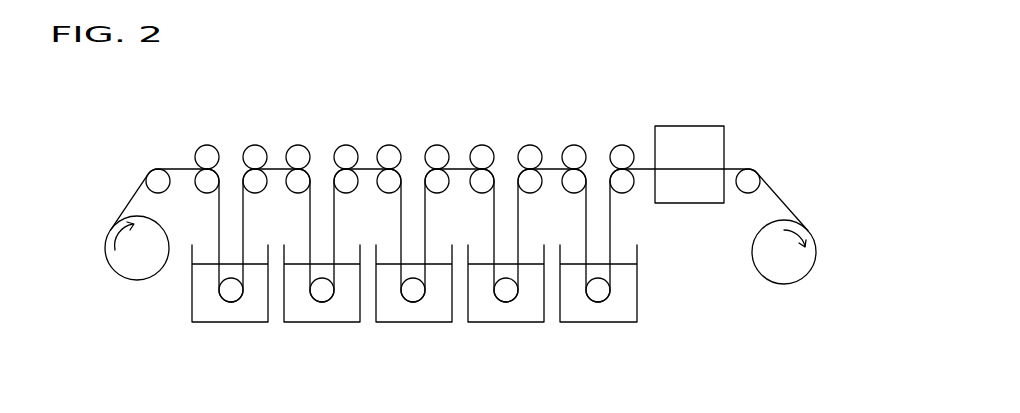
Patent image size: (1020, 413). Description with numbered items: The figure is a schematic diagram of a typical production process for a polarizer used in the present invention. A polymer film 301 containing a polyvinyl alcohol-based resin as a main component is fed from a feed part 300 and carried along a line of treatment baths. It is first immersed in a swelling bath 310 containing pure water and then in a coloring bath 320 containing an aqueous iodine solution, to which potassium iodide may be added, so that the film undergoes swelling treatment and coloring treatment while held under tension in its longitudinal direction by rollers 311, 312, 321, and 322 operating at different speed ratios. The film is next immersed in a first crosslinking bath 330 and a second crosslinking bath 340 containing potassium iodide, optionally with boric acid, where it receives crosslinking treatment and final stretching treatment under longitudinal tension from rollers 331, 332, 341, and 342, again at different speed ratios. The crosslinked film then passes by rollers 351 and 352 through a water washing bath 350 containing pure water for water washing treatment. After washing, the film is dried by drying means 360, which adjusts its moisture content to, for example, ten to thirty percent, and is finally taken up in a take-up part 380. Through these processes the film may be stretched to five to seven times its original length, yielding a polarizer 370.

The feed part 300 is at (120, 263).
The polymer film 301 is at (132, 198).
The swelling bath 310 is at (232, 313).
The roller 311 is at (208, 155).
The roller 312 is at (256, 155).
The coloring bath 320 is at (323, 313).
The roller 321 is at (299, 155).
The roller 322 is at (347, 155).
The first crosslinking bath 330 is at (414, 313).
The roller 331 is at (390, 155).
The roller 332 is at (438, 155).
The second crosslinking bath 340 is at (507, 313).
The roller 341 is at (483, 155).
The roller 342 is at (531, 155).
The water washing bath 350 is at (599, 313).
The roller 351 is at (575, 155).
The roller 352 is at (623, 155).
The drying means 360 is at (687, 140).
The polarizer 370 is at (780, 189).
The take-up part 380 is at (800, 269).